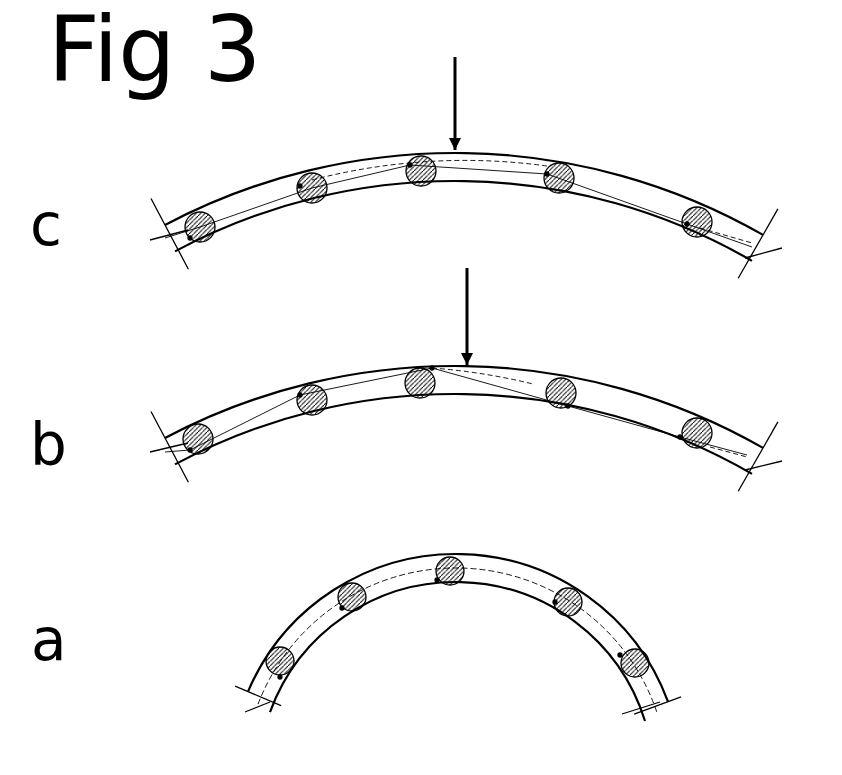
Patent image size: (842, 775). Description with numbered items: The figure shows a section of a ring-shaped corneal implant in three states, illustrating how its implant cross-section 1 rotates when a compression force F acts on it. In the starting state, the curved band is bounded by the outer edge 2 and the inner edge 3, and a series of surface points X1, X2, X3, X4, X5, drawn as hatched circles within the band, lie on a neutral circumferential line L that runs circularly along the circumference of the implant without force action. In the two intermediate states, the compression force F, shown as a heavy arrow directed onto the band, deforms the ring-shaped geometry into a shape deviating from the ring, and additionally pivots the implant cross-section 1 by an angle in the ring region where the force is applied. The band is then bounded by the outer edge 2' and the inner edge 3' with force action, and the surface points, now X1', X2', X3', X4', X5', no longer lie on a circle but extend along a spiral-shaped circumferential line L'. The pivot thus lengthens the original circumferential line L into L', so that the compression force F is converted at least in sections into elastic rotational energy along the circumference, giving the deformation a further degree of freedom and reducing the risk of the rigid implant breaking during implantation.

In FIG. 3c, the implant cross-section 1 is at (203, 212).
In FIG. 3b, the implant cross-section 1 is at (197, 425).
In FIG. 3a, the implant cross-section 1 is at (342, 590).
In FIG. 3a, the outer edge without force action 2 is at (459, 618).
In FIG. 3a, the inner edge without force action 3 is at (458, 651).
In FIG. 3a, the circumferential line L is at (457, 640).
In FIG. 3a, the surface point X1 is at (224, 657).
In FIG. 3a, the surface point X2 is at (357, 648).
In FIG. 3a, the surface point X3 is at (406, 548).
In FIG. 3a, the surface point X4 is at (537, 569).
In FIG. 3a, the surface point X5 is at (579, 679).
In FIG. 3c, the outer edge with force action 2' is at (464, 169).
In FIG. 3b, the outer edge with force action 2' is at (464, 385).
In FIG. 3c, the inner edge with force action 3' is at (466, 229).
In FIG. 3b, the inner edge with force action 3' is at (466, 442).
In FIG. 3c, the circumferential line with force action L' is at (458, 218).
In FIG. 3b, the circumferential line with force action L' is at (456, 435).
In FIG. 3c, the surface point with force action X1' is at (211, 276).
In FIG. 3b, the surface point with force action X1' is at (212, 488).
In FIG. 3c, the surface point with force action X2' is at (282, 150).
In FIG. 3b, the surface point with force action X2' is at (282, 356).
In FIG. 3c, the surface point with force action X3' is at (389, 126).
In FIG. 3b, the surface point with force action X3' is at (449, 332).
In FIG. 3c, the surface point with force action X4' is at (541, 133).
In FIG. 3b, the surface point with force action X4' is at (588, 447).
In FIG. 3c, the surface point with force action X5' is at (682, 190).
In FIG. 3b, the surface point with force action X5' is at (652, 466).
In FIG. 3c, the compression force F is at (466, 103).
In FIG. 3b, the compression force F is at (477, 316).